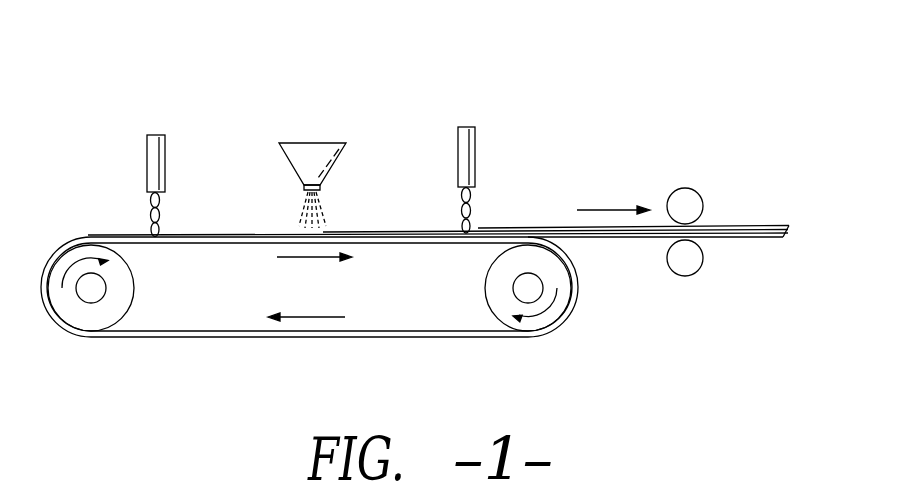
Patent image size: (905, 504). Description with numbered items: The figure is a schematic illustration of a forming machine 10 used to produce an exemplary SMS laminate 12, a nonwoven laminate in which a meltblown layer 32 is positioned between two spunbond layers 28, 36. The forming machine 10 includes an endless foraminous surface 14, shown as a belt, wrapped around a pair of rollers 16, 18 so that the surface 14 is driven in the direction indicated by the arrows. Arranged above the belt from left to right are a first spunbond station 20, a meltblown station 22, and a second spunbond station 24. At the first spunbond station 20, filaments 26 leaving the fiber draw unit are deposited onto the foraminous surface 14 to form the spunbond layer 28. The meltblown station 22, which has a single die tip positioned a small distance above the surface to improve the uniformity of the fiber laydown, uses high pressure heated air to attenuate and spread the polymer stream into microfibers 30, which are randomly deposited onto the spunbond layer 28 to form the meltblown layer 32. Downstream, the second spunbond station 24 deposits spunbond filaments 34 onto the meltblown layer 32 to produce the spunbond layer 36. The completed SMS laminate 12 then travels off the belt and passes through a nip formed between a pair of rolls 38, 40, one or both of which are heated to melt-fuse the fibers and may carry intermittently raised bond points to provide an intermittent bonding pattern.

The forming machine 10 is at (453, 49).
The SMS laminate 12 is at (748, 223).
The endless foraminous surface 14 is at (235, 338).
The roller 16 is at (133, 302).
The roller 18 is at (485, 302).
The first spunbond station 20 is at (147, 155).
The meltblown station 22 is at (310, 142).
The second spunbond station 24 is at (475, 138).
The filaments 26 is at (158, 208).
The spunbond layer 28 is at (205, 237).
The microfibers 30 is at (320, 207).
The meltblown layer 32 is at (371, 230).
The spunbond filaments 34 is at (476, 202).
The spunbond layer 36 is at (517, 228).
The roll 38 is at (683, 187).
The roll 40 is at (686, 276).